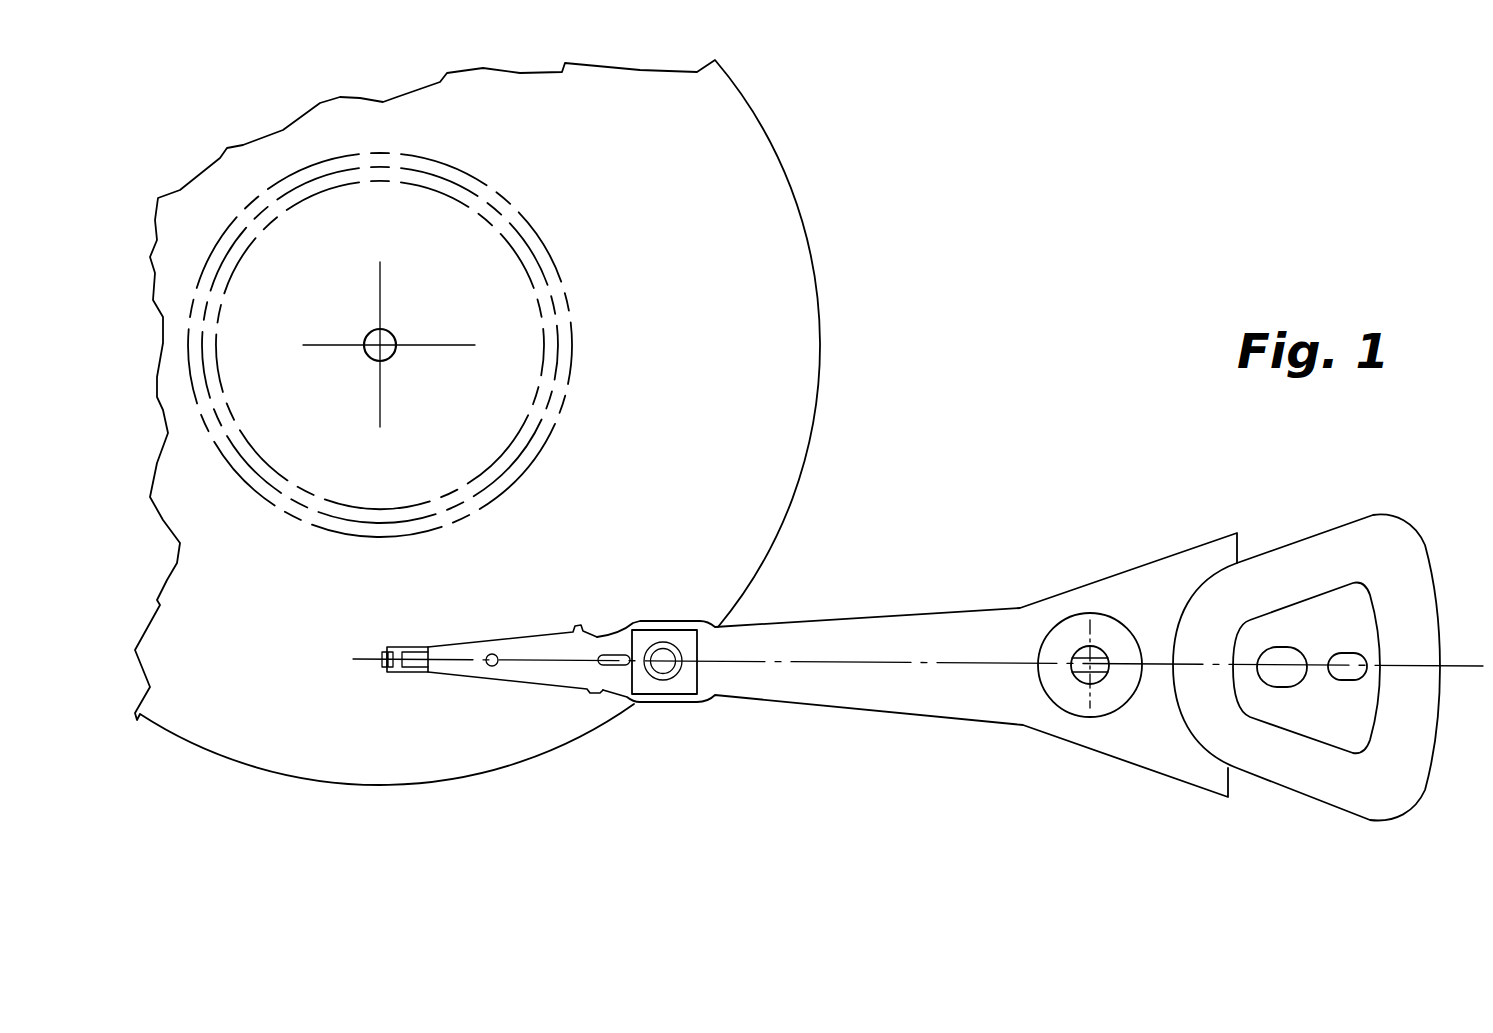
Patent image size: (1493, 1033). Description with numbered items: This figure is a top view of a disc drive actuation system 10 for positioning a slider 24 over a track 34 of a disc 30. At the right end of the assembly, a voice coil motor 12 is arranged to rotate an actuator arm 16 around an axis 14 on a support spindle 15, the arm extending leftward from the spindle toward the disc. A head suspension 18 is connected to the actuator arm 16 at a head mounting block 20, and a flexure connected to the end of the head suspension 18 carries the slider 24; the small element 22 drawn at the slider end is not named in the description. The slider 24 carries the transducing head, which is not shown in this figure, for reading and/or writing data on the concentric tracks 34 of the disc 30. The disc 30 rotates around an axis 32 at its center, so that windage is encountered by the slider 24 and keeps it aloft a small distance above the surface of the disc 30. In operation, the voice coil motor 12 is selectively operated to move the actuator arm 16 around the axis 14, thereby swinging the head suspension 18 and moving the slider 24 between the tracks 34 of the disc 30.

The disc drive actuation system 10 is at (1027, 478).
The voice coil motor 12 is at (1417, 527).
The axis 14 is at (1082, 672).
The support spindle 15 is at (1082, 645).
The actuator arm 16 is at (895, 620).
The head suspension 18 is at (512, 637).
The head mounting block 20 is at (660, 630).
The slider 22 is at (401, 647).
The slider 24 is at (385, 672).
The disc 30 is at (818, 390).
The axis 32 is at (393, 332).
The track 34 is at (530, 460).